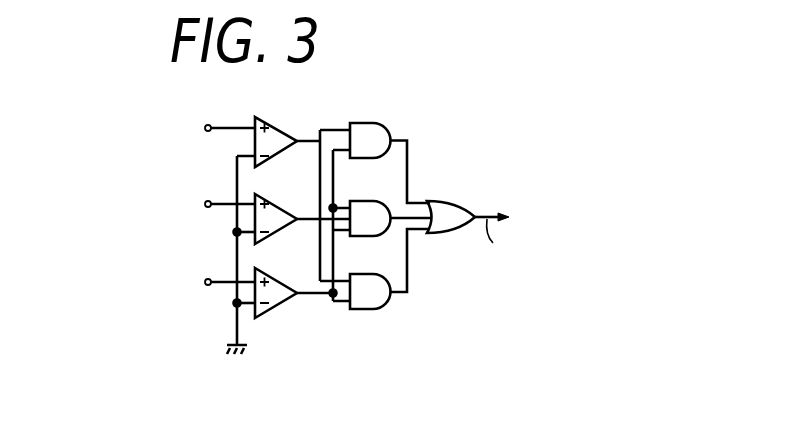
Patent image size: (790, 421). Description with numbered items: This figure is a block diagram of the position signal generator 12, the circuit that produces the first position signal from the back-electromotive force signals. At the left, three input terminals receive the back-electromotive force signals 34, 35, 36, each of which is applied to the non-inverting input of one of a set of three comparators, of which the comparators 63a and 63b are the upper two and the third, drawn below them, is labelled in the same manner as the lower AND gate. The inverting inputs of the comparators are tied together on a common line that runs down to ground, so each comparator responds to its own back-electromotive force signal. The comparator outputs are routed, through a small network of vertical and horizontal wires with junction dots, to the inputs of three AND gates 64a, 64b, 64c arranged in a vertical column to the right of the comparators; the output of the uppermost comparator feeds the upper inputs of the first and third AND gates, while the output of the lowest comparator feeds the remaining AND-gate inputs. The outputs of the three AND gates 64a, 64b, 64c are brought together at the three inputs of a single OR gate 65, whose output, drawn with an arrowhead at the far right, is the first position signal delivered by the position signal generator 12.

The position signal generator 12 is at (462, 124).
The back-electromotive force signal 34 is at (223, 125).
The back-electromotive force signal 35 is at (224, 195).
The back-electromotive force signal 36 is at (222, 278).
The comparator 63a is at (285, 114).
The comparator 63b is at (283, 196).
The AND gate 64a is at (388, 125).
The AND gate 64b is at (372, 194).
The AND gate 64c is at (284, 271).
The OR gate 65 is at (455, 202).